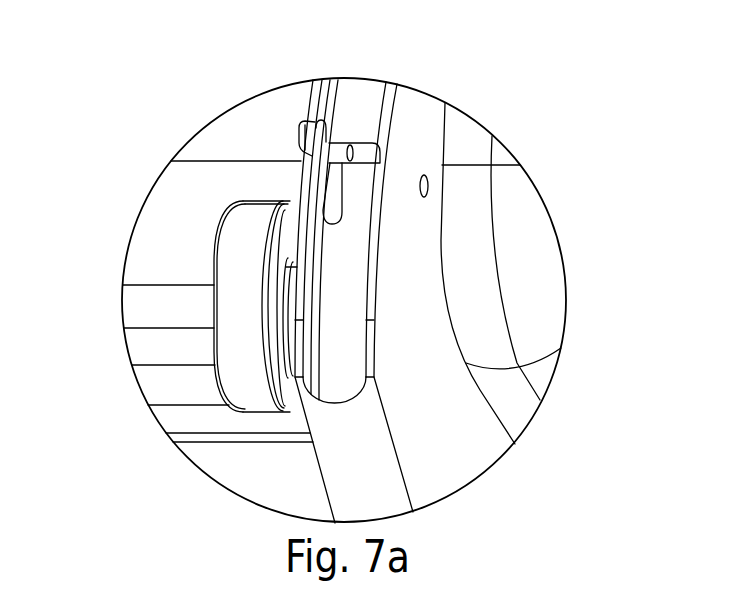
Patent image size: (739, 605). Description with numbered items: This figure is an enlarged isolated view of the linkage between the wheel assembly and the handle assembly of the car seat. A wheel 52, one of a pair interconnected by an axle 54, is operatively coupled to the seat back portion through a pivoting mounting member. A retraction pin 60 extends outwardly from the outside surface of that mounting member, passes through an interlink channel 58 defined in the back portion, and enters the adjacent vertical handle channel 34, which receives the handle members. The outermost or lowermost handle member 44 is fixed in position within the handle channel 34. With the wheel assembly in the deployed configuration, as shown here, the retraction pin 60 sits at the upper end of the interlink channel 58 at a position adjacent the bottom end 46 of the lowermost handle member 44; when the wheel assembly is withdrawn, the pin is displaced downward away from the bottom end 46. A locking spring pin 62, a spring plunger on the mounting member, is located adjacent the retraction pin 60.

The handle channel 34 is at (340, 322).
The outermost/lowermost handle member 44 is at (372, 112).
The bottom end 46 is at (368, 153).
The wheel 52 is at (247, 268).
The axle 54 is at (143, 306).
The interlink channel 58 is at (330, 197).
The retraction pin 60 is at (337, 143).
The locking spring pin 62 is at (299, 130).